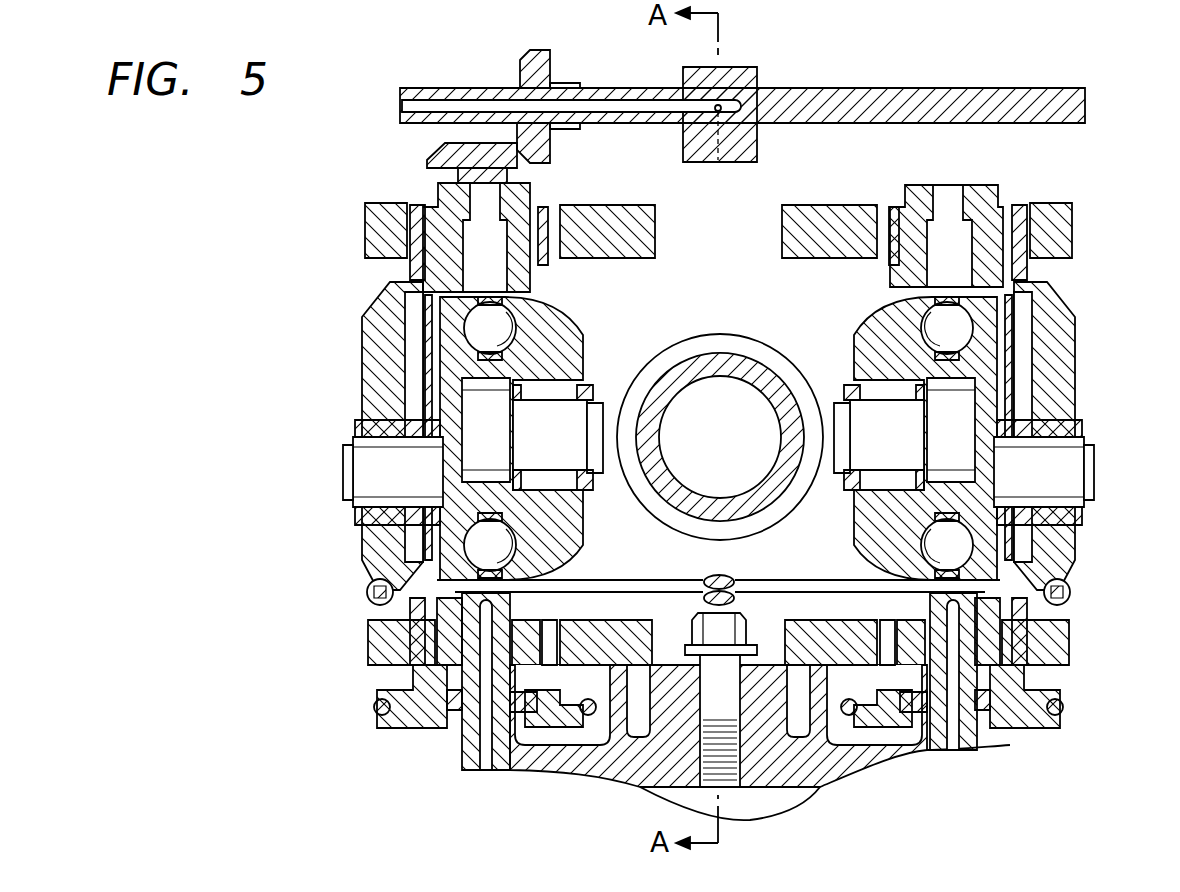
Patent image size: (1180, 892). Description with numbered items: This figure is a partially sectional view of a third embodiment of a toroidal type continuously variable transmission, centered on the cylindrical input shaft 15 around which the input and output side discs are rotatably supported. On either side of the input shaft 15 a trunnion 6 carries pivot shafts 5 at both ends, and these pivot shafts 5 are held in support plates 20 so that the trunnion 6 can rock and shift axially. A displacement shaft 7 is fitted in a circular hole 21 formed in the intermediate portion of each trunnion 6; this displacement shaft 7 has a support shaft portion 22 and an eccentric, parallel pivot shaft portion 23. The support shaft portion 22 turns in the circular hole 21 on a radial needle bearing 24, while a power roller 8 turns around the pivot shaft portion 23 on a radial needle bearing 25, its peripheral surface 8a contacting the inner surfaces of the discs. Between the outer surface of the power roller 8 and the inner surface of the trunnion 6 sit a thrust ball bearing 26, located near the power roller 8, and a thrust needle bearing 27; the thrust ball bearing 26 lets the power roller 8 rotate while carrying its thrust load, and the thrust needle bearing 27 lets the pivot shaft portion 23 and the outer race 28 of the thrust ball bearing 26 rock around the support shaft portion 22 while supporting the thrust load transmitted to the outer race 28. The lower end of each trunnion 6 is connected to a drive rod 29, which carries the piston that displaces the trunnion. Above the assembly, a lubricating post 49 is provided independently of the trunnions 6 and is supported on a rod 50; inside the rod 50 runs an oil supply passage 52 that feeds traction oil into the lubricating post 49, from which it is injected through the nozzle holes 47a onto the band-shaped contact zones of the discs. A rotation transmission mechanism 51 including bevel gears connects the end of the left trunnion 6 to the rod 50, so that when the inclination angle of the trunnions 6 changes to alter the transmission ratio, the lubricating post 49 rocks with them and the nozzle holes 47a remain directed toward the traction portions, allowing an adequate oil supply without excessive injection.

The pivot shaft 5 is at (450, 198).
The trunnion 6 is at (372, 342).
The displacement shaft 7 is at (360, 480).
The power roller 8 is at (557, 322).
The peripheral surface 8a is at (568, 572).
The input shaft 15 is at (690, 367).
The support plate 20 is at (372, 222).
The circular hole 21 is at (360, 508).
The support shaft portion 22 is at (360, 452).
The pivot shaft portion 23 is at (582, 452).
The radial needle bearing 24 is at (360, 425).
The radial needle bearing 25 is at (541, 387).
The thrust ball bearing 26 is at (425, 298).
The thrust needle bearing 27 is at (408, 325).
The outer race 28 is at (362, 578).
The drive rod 29 is at (462, 742).
The nozzle hole 47a is at (722, 138).
The lubricating post 49 is at (755, 152).
The rod 50 is at (628, 95).
The rotation transmission mechanism 51 is at (522, 72).
The oil supply passage 52 is at (428, 103).